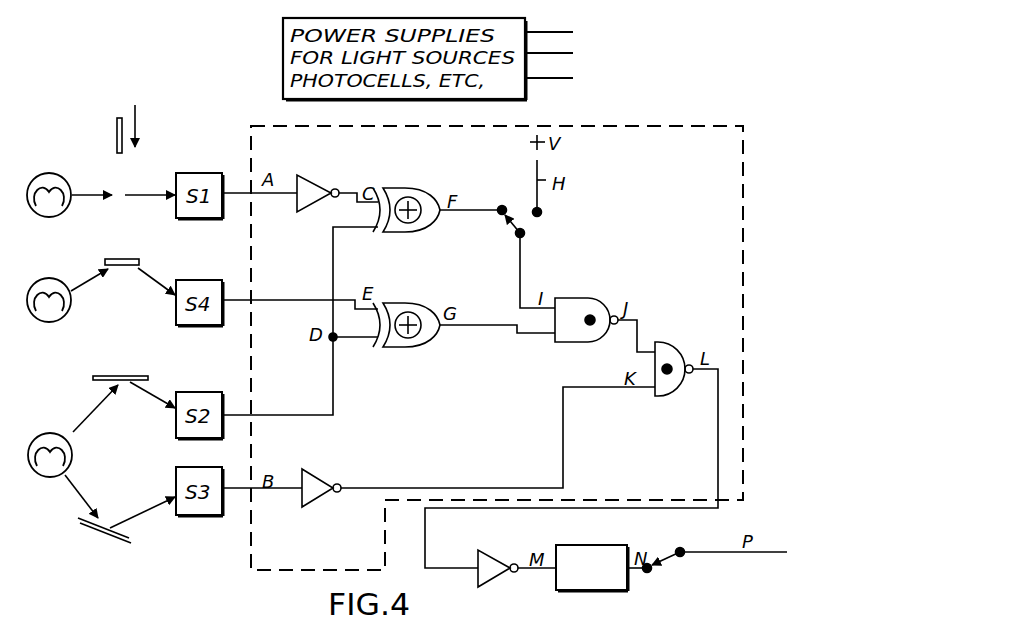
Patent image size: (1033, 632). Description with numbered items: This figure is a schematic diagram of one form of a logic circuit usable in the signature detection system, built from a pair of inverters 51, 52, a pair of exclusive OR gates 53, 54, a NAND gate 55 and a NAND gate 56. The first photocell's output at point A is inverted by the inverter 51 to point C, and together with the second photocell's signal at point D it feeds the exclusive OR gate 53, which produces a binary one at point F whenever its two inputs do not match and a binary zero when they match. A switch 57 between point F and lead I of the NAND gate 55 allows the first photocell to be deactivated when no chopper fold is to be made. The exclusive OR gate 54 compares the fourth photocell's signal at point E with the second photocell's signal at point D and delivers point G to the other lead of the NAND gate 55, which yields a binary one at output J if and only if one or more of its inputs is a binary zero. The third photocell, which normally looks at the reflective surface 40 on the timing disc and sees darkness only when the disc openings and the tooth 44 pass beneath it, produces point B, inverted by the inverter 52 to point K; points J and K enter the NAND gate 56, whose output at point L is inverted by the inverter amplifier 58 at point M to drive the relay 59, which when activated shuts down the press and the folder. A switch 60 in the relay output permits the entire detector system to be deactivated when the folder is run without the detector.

The reflective surface 40 is at (100, 538).
The tooth 44 is at (125, 376).
The inverter 51 is at (316, 182).
The inverter 52 is at (318, 477).
The exclusive OR gate 53 is at (437, 182).
The exclusive OR gate 54 is at (412, 303).
The NAND gate 55 is at (590, 299).
The NAND gate 56 is at (667, 345).
The switch 57 is at (507, 231).
The inverter amplifier 58 is at (490, 556).
The relay 59 is at (581, 541).
The switch 60 is at (670, 556).